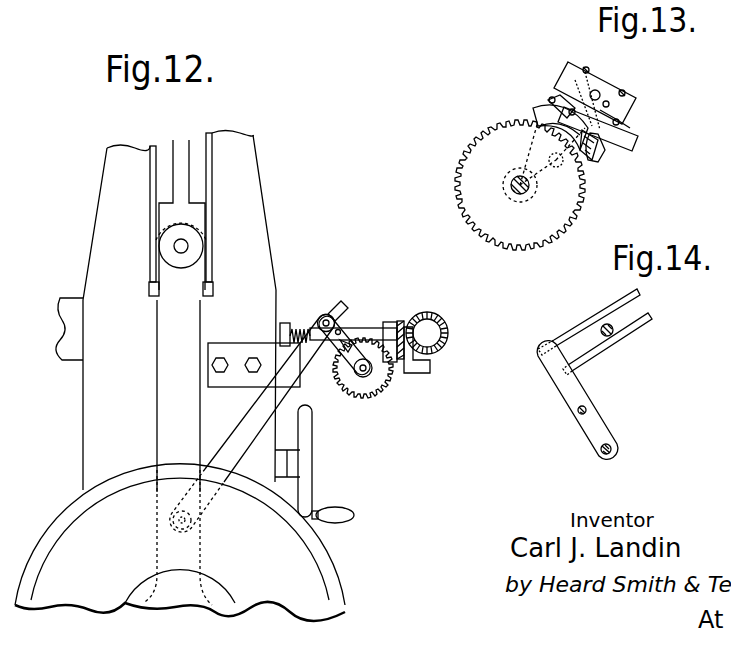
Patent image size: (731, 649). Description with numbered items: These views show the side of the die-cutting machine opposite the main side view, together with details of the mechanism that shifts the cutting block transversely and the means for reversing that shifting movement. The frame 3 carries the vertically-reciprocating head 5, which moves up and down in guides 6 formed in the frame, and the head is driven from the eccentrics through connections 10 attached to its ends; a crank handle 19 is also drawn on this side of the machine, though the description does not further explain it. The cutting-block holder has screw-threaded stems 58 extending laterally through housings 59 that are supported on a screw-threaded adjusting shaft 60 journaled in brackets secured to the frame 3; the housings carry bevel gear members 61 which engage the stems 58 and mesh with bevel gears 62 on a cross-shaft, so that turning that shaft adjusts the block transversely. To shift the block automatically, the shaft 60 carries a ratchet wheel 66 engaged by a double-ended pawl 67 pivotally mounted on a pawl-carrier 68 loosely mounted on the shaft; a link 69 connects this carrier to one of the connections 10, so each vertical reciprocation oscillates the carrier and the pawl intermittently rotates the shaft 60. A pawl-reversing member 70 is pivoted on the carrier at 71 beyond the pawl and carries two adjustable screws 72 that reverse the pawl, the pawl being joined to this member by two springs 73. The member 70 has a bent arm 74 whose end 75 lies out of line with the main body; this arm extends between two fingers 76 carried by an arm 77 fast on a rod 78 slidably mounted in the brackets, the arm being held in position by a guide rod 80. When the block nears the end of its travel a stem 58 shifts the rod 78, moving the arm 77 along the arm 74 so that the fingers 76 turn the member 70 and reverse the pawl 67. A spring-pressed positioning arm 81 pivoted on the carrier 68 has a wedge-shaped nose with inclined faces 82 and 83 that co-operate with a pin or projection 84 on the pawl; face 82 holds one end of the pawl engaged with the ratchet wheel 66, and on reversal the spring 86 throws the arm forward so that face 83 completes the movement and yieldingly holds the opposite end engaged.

In FIG. 12, the frame 3 is at (100, 262).
In FIG. 12, the vertically-reciprocating head 5 is at (165, 172).
In FIG. 12, the guides 6 is at (150, 153).
In FIG. 12, the connections 10 is at (172, 368).
In FIG. 12, the crank handle 19 is at (310, 447).
In FIG. 12, the screw-threaded stems 58 is at (298, 327).
In FIG. 12, the housings 59 is at (370, 333).
In FIG. 12, the screw-threaded adjusting shaft 60 is at (364, 378).
In FIG. 13, the screw-threaded adjusting shaft 60 is at (510, 180).
In FIG. 12, the bevel gear members 61 is at (400, 325).
In FIG. 12, the bevel gears 62 is at (438, 320).
In FIG. 12, the ratchet wheel 66 is at (388, 388).
In FIG. 13, the ratchet wheel 66 is at (560, 225).
In FIG. 12, the pawl 67 is at (348, 328).
In FIG. 13, the pawl 67 is at (545, 102).
In FIG. 12, the pawl-carrier 68 is at (352, 340).
In FIG. 13, the pawl-carrier 68 is at (588, 155).
In FIG. 12, the link 69 is at (278, 385).
In FIG. 12, the pawl-reversing member 70 is at (338, 305).
In FIG. 13, the pawl-reversing member 70 is at (632, 115).
In FIG. 13, the pivot 71 is at (600, 92).
In FIG. 12, the adjustable screws 72 is at (309, 325).
In FIG. 13, the adjustable screws 72 is at (586, 68).
In FIG. 13, the springs 73 is at (568, 88).
In FIG. 13, the arm 74 is at (612, 103).
In FIG. 14, the end 75 is at (612, 335).
In FIG. 14, the fingers 76 is at (647, 317).
In FIG. 14, the arm 77 is at (560, 395).
In FIG. 14, the rod 78 is at (600, 456).
In FIG. 14, the guide rod 80 is at (578, 415).
In FIG. 13, the spring-pressed positioning arm 81 is at (583, 190).
In FIG. 13, the inclined face 82 is at (600, 138).
In FIG. 13, the inclined face 83 is at (527, 127).
In FIG. 13, the pin or projection 84 is at (635, 122).
In FIG. 13, the spring 86 is at (545, 143).